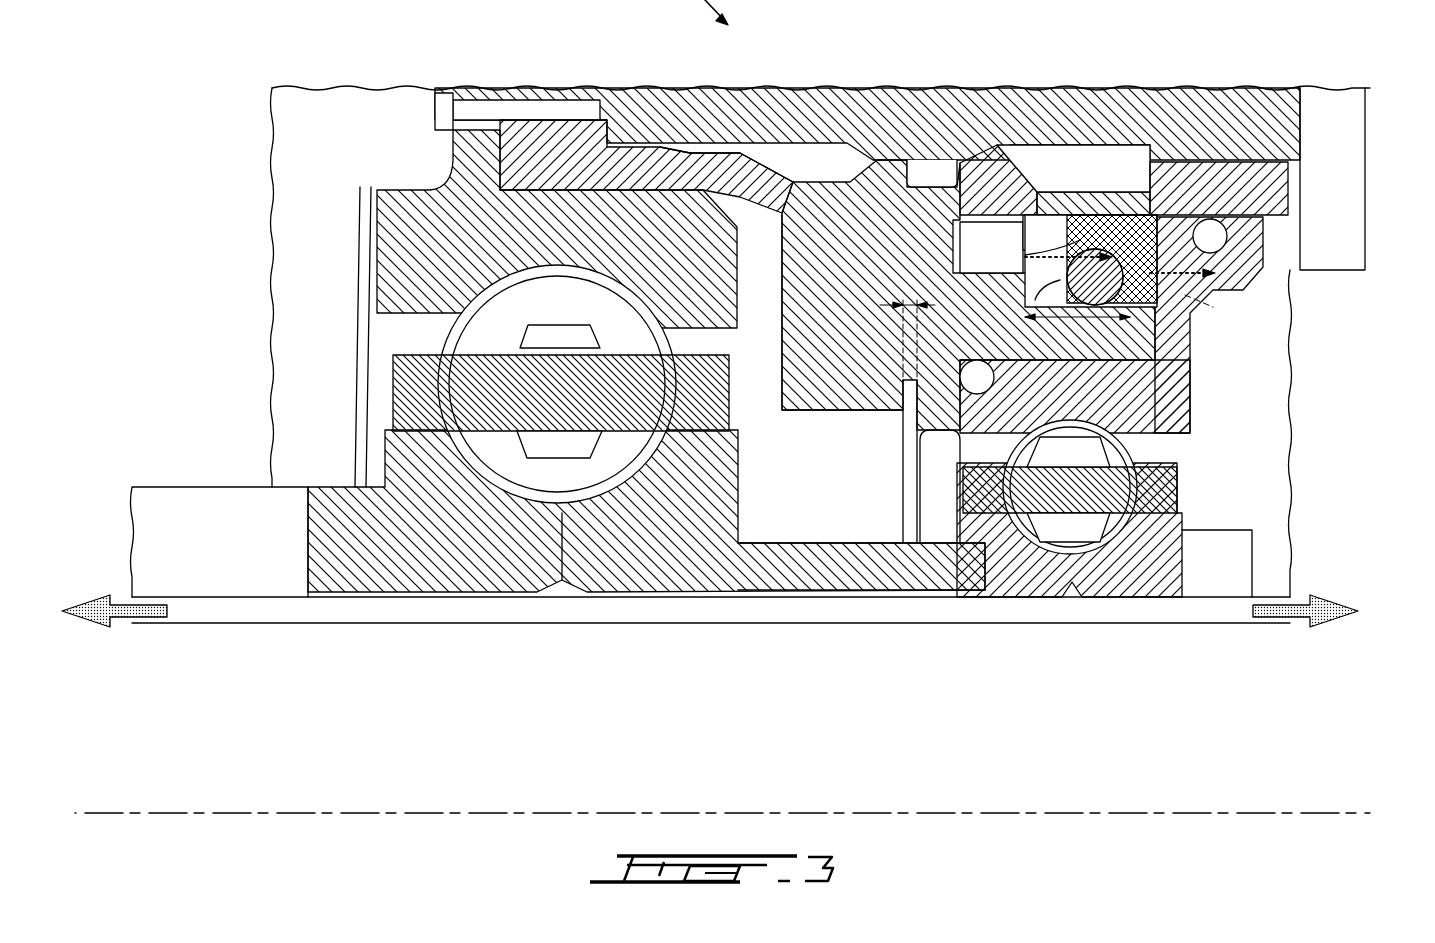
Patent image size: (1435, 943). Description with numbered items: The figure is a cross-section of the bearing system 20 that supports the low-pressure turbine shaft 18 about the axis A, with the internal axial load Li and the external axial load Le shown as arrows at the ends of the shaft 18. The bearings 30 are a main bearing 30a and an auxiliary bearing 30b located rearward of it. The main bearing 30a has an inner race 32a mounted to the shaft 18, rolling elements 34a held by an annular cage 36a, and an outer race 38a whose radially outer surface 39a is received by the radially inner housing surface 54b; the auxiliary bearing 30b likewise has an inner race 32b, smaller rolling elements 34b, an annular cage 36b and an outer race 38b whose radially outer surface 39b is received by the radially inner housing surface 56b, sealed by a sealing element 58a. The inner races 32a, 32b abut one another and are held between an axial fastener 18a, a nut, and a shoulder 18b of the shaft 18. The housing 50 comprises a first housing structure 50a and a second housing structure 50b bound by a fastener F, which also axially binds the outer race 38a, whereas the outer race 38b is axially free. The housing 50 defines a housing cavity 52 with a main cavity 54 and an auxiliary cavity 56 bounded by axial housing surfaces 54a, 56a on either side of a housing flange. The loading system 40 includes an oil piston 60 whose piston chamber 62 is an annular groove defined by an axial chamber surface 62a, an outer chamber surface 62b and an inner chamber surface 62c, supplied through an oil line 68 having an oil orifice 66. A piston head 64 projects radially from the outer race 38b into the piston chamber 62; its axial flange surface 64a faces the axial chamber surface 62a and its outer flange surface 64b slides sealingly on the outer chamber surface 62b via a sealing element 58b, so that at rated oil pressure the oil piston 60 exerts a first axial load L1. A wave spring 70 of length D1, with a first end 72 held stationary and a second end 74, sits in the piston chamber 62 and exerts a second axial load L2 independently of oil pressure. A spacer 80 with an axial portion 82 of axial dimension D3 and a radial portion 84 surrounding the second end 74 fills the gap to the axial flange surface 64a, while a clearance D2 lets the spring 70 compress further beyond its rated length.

The bearing system 20 is at (340, 72).
The bearing 30 is at (198, 184).
The fastener F is at (443, 100).
The housing 50 is at (867, 124).
The first housing structure 50a is at (672, 105).
The second housing structure 50b is at (827, 220).
The axial housing surface 54a is at (780, 327).
The radially inner housing surface 54b is at (602, 190).
The outer race 38a is at (393, 240).
The rolling elements 34a is at (480, 333).
The annular cage 36a is at (407, 400).
The inner race 32a is at (400, 465).
The radially outer surface 39a is at (565, 133).
The axial fastener 18a is at (167, 533).
The external axial load Le is at (118, 618).
The main bearing 30a is at (558, 598).
The low-pressure turbine shaft 18 is at (737, 620).
The main cavity 54 is at (787, 488).
The housing cavity 52 is at (833, 520).
The auxiliary cavity 56 is at (921, 485).
The axial housing surface 56a is at (912, 375).
The radially inner housing surface 56b is at (960, 400).
The oil orifice 66 is at (990, 240).
The fluid port 68 is at (1010, 245).
The axial chamber surface 62a is at (1040, 185).
The piston chamber 62 is at (1040, 200).
The outer chamber surface 62b is at (1070, 215).
The inner chamber surface 62c is at (1060, 300).
The loading system 40 is at (1047, 170).
The radial portion 84 is at (1093, 230).
The spacer 80 is at (1112, 225).
The axial flange surface 64a is at (1165, 185).
The outer flange surface 64b is at (1235, 185).
The sealing element 58b is at (1217, 233).
The second end 74 is at (1210, 258).
The piston head 64 is at (1240, 268).
The oil piston 60 is at (1258, 289).
The axial portion 82 is at (1157, 273).
The spring 70 is at (1091, 261).
The first end 72 is at (1030, 285).
The first axial load L1 is at (1051, 301).
The second axial load L2 is at (1210, 309).
The axial distance D1 is at (1065, 389).
The axial distance D2 is at (907, 326).
The axial dimension D3 is at (1128, 389).
The radially outer surface 39b is at (947, 360).
The outer race 38b is at (1163, 405).
The sealing element 58a is at (980, 380).
The rolling elements 34b is at (1120, 455).
The annular cage 36b is at (1170, 492).
The inner race 32b is at (1167, 540).
The auxiliary bearing 30b is at (1069, 596).
The shoulder 18b is at (1213, 567).
The internal axial load Li is at (1297, 612).
The axis A is at (257, 815).